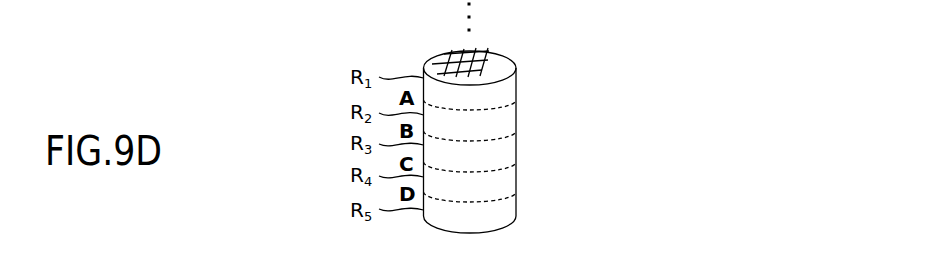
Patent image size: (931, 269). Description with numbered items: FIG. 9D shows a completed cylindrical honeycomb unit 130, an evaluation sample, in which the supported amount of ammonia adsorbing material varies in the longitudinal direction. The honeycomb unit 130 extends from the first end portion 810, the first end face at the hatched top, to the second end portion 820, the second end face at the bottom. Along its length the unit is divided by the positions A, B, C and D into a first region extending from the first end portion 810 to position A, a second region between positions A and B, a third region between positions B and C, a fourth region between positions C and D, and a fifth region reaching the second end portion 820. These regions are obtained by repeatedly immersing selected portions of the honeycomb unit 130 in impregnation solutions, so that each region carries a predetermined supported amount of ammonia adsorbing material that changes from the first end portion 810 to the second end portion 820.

The honeycomb unit 130 is at (317, 78).
The first end portion 810 is at (409, 57).
The second end portion 820 is at (528, 226).